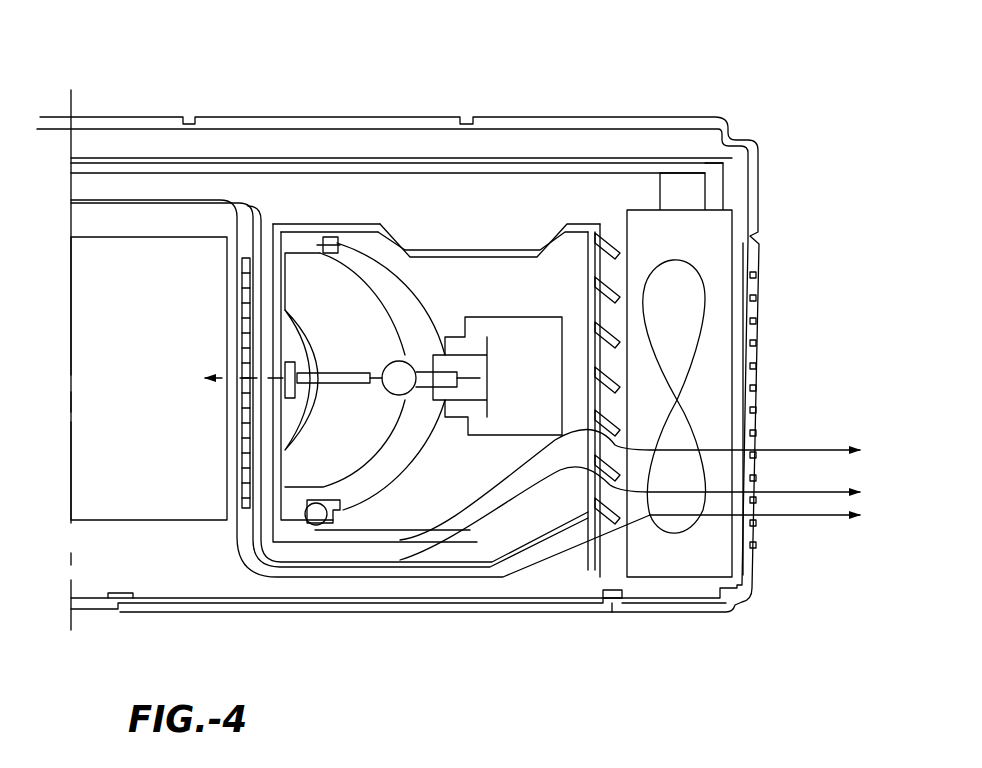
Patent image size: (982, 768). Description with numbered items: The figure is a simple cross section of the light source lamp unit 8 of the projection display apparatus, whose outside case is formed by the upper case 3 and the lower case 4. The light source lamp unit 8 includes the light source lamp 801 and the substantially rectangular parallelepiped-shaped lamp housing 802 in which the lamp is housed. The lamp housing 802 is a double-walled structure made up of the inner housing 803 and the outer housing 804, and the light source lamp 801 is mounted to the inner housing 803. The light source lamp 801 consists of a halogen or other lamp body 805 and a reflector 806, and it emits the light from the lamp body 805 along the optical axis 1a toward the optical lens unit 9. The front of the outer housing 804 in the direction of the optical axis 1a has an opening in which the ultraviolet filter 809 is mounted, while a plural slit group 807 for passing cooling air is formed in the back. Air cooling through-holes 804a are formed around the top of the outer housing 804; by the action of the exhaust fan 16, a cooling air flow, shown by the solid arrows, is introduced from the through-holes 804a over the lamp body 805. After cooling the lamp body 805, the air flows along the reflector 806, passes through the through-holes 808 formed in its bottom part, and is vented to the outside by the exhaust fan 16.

The optical axis 1a is at (222, 378).
The upper case 3 is at (367, 116).
The lower case 4 is at (108, 611).
The light source lamp unit 8 is at (550, 205).
The optical lens unit 9 is at (107, 393).
The exhaust fan 16 is at (707, 543).
The light source lamp 801 is at (402, 469).
The lamp housing 802 is at (389, 301).
The inner housing 803 is at (276, 264).
The outer housing 804 is at (493, 250).
The air cooling through-holes 804a is at (375, 318).
The lamp body 805 is at (410, 392).
The reflector 806 is at (383, 480).
The slit group 807 is at (650, 516).
The through-holes 808 is at (338, 245).
The ultraviolet filter 809 is at (252, 505).